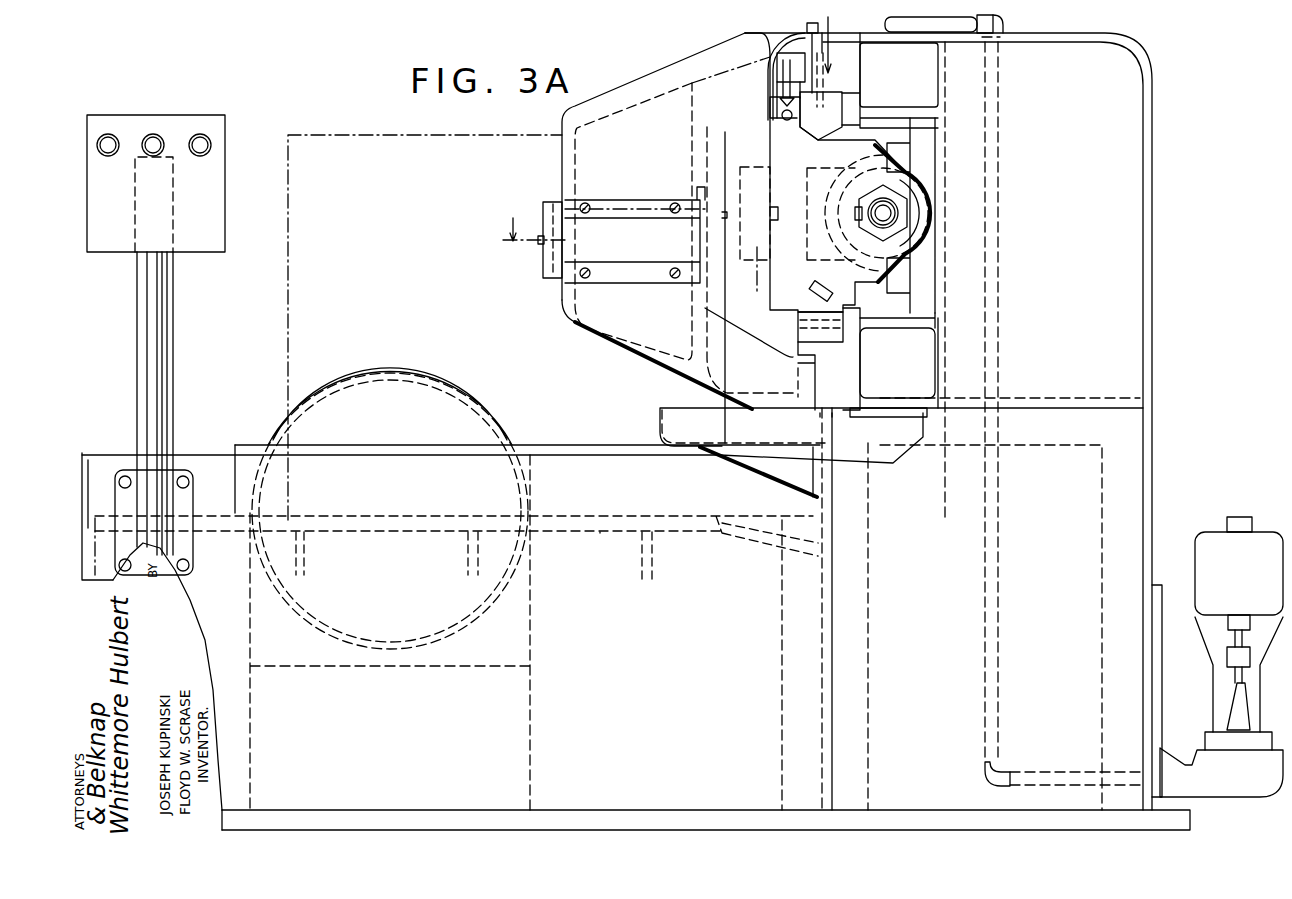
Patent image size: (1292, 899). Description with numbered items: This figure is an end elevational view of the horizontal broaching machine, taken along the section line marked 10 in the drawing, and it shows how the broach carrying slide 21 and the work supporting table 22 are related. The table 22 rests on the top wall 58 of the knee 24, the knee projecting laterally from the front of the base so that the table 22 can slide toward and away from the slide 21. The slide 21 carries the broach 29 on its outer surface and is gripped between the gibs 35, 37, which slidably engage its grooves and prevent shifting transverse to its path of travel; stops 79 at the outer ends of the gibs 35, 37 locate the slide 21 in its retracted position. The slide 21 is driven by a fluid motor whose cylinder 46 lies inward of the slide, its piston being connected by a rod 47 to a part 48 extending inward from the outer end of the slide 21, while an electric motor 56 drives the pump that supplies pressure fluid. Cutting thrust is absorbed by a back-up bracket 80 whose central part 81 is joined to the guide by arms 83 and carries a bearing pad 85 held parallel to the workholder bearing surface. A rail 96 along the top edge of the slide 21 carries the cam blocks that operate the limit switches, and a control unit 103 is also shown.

The section line indicator 10 is at (680, 128).
The broach carrying slide 21 is at (783, 300).
The work supporting table 22 is at (814, 163).
The knee 24 is at (698, 616).
The broach 29 is at (754, 231).
The gib 35 is at (835, 337).
The gib 37 is at (838, 111).
The cylinder 46 is at (922, 197).
The rod 47 is at (893, 230).
The part 48 is at (917, 215).
The electric motor 56 is at (437, 397).
The top wall 58 is at (620, 527).
The stops 79 is at (814, 287).
The back-up bracket 80 is at (633, 318).
The central part 81 is at (563, 288).
The arms 83 is at (660, 357).
The bearing pad 85 is at (662, 249).
The rail 96 is at (780, 113).
The control panel 103 is at (183, 240).